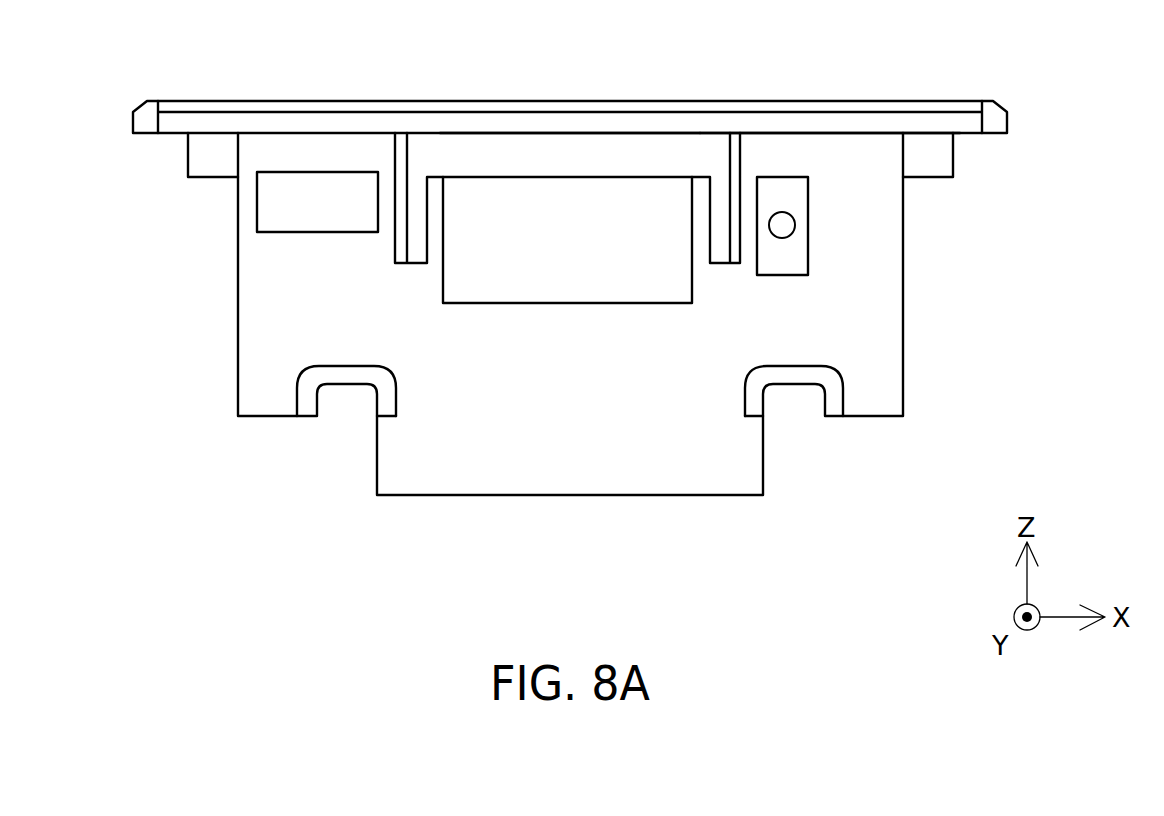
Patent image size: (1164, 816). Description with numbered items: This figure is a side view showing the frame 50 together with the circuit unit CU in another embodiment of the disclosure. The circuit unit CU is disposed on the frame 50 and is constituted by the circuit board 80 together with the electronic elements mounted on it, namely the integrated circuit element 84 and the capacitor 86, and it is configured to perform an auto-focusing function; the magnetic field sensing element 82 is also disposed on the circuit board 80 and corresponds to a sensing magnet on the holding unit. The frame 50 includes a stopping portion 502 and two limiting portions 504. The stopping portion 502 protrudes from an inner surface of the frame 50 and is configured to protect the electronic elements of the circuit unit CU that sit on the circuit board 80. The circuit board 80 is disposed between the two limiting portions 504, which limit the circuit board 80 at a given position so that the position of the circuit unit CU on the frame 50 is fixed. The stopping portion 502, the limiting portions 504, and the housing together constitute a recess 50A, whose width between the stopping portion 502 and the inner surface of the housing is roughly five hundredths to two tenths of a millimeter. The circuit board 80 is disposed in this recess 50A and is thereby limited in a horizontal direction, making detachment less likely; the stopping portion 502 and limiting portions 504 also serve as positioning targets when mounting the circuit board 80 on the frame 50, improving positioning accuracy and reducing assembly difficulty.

The frame 50 is at (1015, 95).
The recess 50A is at (828, 133).
The stopping portion 502 is at (512, 155).
The limiting portions 504 is at (205, 160).
The circuit board 80 is at (877, 351).
The magnetic field sensing element 82 is at (793, 253).
The integrated circuit element 84 is at (482, 275).
The capacitor 86 is at (275, 207).
The circuit unit CU is at (639, 314).